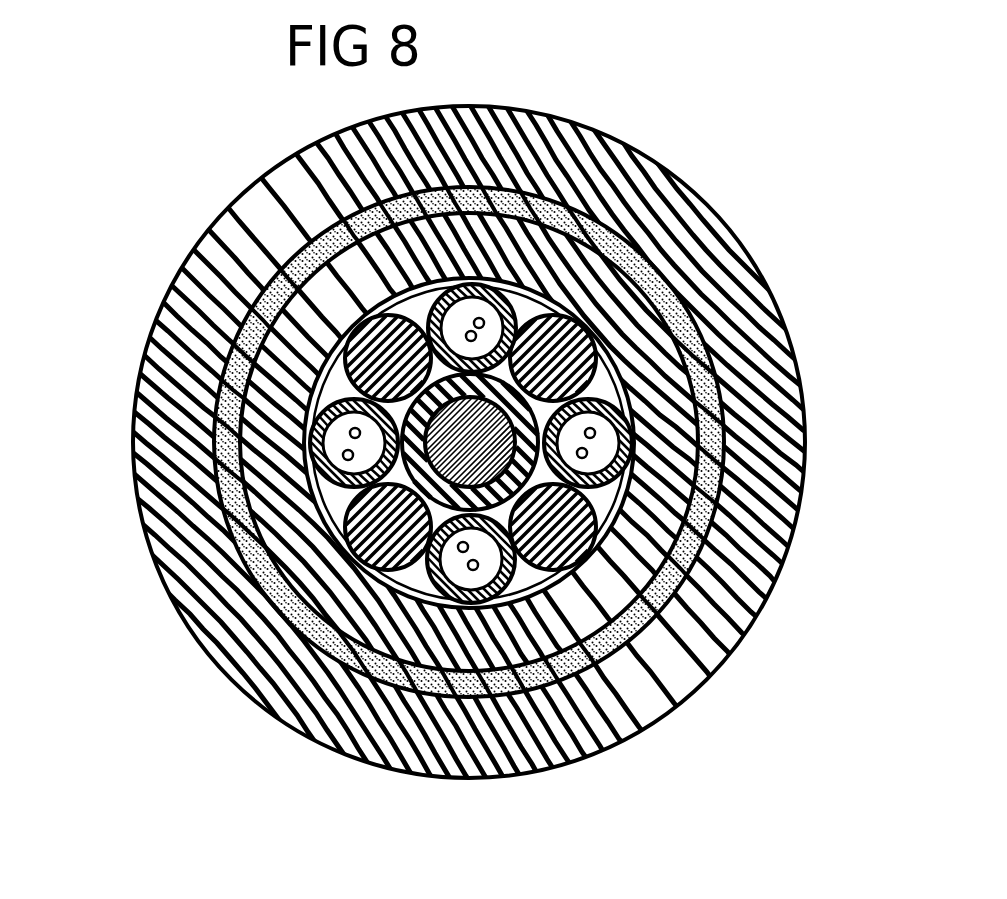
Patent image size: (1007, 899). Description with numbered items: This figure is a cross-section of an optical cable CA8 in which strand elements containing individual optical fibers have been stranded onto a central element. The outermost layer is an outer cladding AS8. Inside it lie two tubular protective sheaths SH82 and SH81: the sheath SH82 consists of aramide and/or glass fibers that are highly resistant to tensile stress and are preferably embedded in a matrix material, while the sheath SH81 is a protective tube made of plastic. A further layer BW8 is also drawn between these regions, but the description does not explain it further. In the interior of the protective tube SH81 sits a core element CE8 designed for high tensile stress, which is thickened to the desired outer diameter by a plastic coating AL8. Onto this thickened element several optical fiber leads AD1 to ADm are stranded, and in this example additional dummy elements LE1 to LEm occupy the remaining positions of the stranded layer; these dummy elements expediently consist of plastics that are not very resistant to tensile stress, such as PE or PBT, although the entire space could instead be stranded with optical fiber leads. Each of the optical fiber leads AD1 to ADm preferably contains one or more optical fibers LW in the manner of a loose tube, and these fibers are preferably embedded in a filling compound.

The optical cable CA8 is at (628, 139).
The outer cladding AS8 is at (202, 295).
The tubular protective sheath SH82 is at (217, 520).
The reinforcement band BW8 is at (648, 252).
The protective tube SH81 is at (303, 575).
The plastic coating AL8 is at (625, 537).
The core element CE8 is at (607, 342).
The dummy element LE1 is at (383, 580).
The dummy element LEm is at (590, 555).
The optical fiber lead AD1 is at (474, 593).
The optical fiber lead ADm is at (725, 419).
The optical fibers LW is at (590, 435).